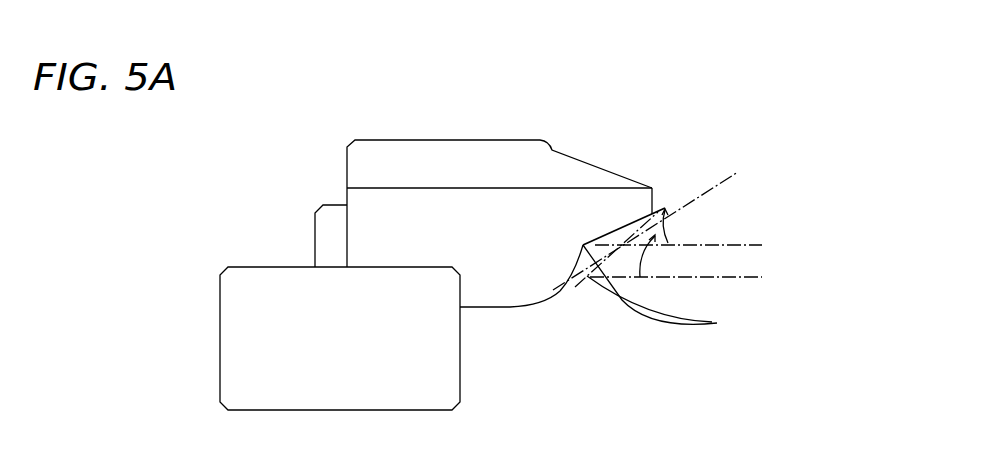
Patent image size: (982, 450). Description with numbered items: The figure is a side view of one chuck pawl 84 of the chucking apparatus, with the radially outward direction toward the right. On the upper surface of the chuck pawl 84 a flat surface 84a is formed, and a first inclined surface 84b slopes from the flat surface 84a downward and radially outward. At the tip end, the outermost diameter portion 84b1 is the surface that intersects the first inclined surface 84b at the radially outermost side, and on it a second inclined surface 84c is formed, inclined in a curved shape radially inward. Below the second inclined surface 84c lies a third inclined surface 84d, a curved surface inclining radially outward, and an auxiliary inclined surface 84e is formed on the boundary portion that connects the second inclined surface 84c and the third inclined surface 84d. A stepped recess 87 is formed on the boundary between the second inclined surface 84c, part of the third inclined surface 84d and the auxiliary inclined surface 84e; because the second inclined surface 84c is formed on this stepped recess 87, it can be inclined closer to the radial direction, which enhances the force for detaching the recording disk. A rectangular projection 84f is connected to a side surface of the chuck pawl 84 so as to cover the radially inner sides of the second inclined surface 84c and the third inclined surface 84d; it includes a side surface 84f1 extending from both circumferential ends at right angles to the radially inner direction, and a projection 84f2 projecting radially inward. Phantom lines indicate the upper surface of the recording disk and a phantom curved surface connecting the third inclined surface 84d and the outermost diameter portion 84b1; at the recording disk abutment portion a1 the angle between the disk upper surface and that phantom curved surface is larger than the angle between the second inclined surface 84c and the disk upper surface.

The chuck pawl 84 is at (252, 30).
The flat surface 84a is at (410, 139).
The first inclined surface 84b is at (593, 166).
The outermost diameter portion 84b1 is at (658, 207).
The second inclined surface 84c is at (622, 229).
The third inclined surface 84d is at (515, 307).
The auxiliary inclined surface 84e is at (563, 282).
The rectangular projection 84f is at (340, 299).
The side surface 84f1 is at (280, 352).
The projection 84f2 is at (327, 232).
The stepped recess 87 is at (585, 245).
The recording disk abutment portion a1 is at (670, 294).